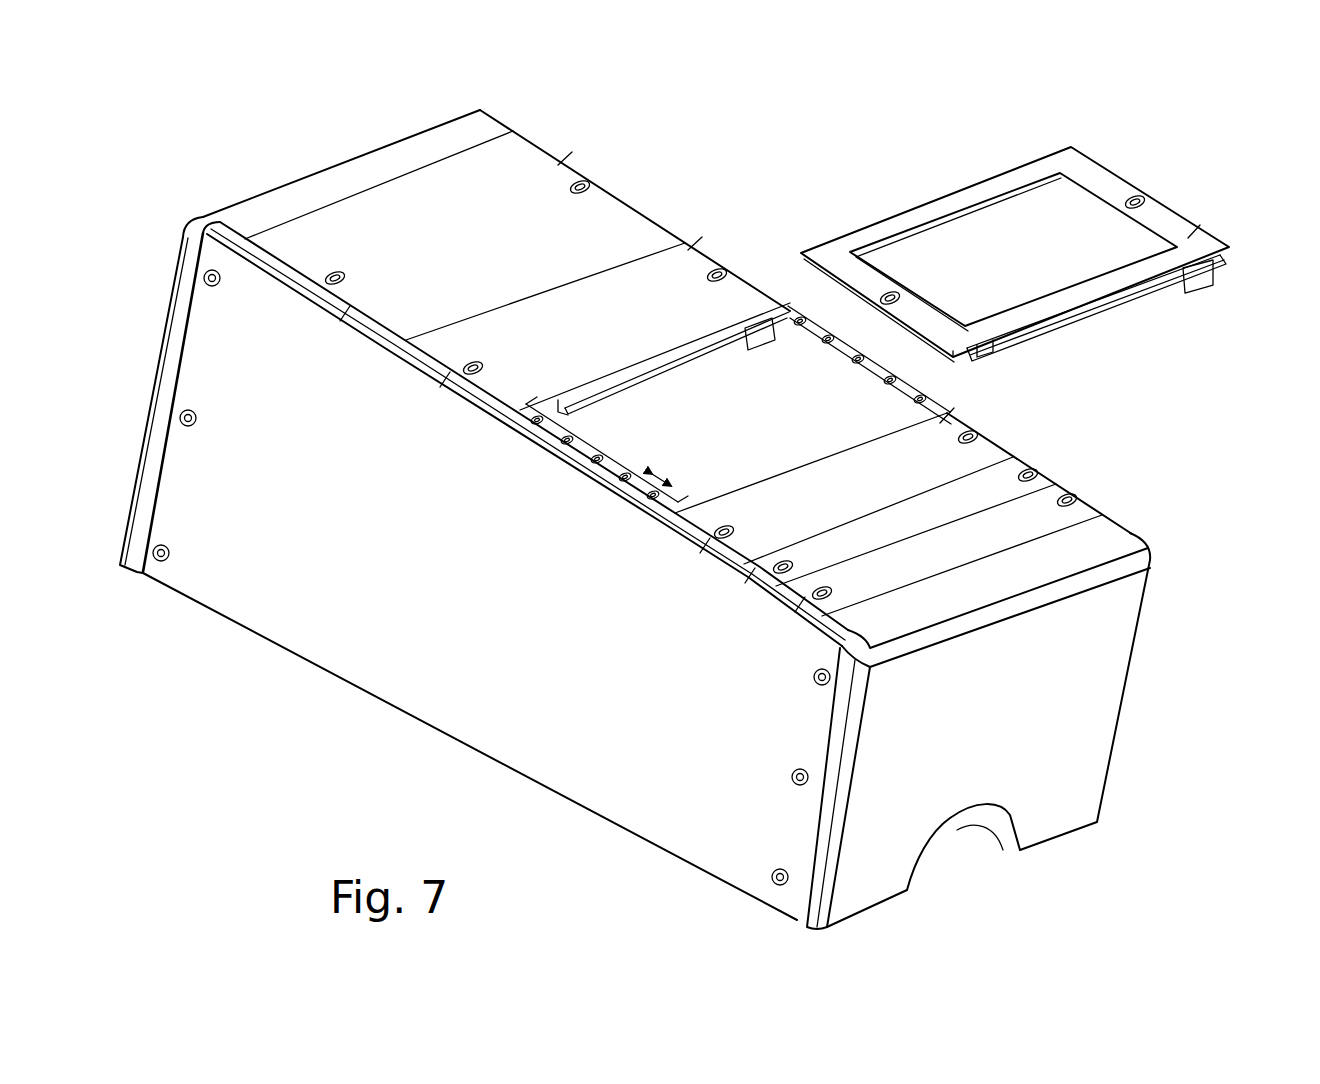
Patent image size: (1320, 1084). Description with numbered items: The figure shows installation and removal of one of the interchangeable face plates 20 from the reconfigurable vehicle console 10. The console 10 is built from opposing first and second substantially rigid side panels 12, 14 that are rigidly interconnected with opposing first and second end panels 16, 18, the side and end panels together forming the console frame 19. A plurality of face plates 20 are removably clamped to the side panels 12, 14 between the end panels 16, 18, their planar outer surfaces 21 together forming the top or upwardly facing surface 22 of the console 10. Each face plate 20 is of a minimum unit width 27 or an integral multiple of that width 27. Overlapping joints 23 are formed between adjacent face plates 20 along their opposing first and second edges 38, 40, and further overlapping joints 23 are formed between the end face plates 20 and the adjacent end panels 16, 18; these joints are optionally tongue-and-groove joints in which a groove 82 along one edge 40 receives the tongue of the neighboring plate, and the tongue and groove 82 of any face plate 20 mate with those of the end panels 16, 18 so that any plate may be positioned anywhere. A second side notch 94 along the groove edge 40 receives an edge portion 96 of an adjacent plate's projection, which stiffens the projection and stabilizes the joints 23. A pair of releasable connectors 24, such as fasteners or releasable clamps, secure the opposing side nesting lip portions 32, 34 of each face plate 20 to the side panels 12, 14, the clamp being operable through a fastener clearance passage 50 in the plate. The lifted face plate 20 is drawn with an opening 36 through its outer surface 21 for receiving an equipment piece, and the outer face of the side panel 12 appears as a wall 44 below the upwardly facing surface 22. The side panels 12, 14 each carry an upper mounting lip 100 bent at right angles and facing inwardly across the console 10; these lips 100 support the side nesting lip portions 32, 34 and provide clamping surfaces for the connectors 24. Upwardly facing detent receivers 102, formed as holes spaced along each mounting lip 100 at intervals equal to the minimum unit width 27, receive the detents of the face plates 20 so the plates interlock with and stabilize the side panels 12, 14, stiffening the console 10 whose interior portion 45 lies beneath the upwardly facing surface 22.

The reconfigurable vehicle console 10 is at (705, 150).
The first side panel 12 is at (293, 651).
The second side panel 14 is at (753, 446).
The first end panel 16 is at (1033, 837).
The second end panel 18 is at (247, 207).
The console frame 19 is at (313, 170).
The face plate 20 is at (540, 142).
The outer surface 21 is at (479, 260).
The upwardly facing surface 22 is at (519, 162).
The overlapping joint 23 is at (355, 190).
The releasable connector 24 is at (344, 280).
The minimum unit width 27 is at (667, 477).
The first side nesting lip portion 32 is at (345, 313).
The second side nesting lip portion 34 is at (565, 170).
The opening 36 is at (990, 207).
The first edge 38 is at (833, 452).
The second edge 40 is at (690, 356).
The side wall 44 is at (230, 607).
The interior portion 45 is at (703, 423).
The fastener clearance passage 50 is at (1145, 200).
The groove 82 is at (632, 380).
The second side notch 94 is at (556, 409).
The edge portion 96 is at (747, 349).
The upper mounting lip 100 is at (547, 433).
The detent receiver 102 is at (528, 427).